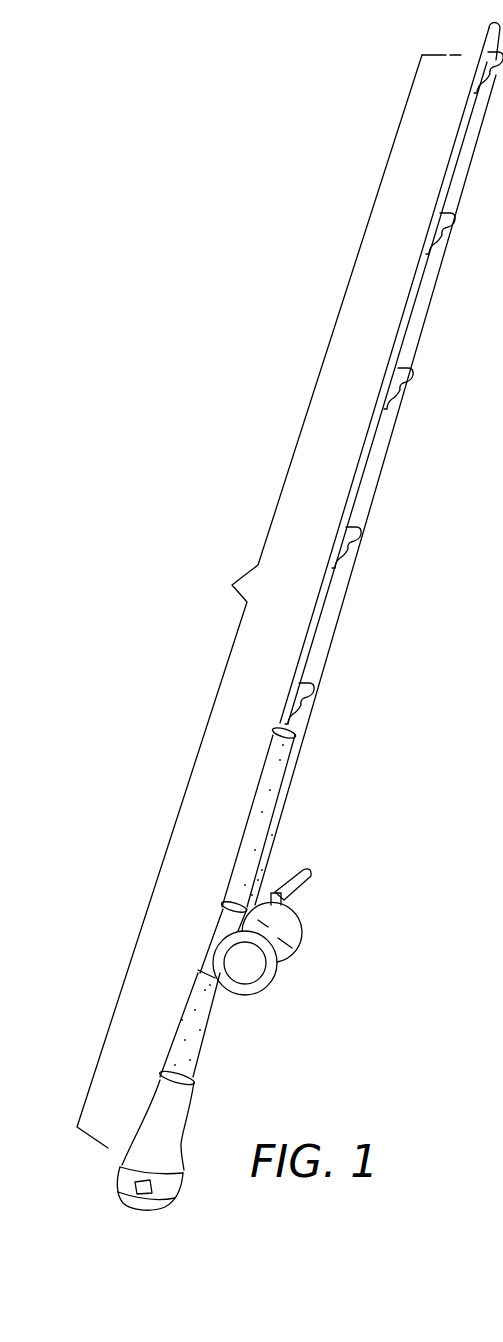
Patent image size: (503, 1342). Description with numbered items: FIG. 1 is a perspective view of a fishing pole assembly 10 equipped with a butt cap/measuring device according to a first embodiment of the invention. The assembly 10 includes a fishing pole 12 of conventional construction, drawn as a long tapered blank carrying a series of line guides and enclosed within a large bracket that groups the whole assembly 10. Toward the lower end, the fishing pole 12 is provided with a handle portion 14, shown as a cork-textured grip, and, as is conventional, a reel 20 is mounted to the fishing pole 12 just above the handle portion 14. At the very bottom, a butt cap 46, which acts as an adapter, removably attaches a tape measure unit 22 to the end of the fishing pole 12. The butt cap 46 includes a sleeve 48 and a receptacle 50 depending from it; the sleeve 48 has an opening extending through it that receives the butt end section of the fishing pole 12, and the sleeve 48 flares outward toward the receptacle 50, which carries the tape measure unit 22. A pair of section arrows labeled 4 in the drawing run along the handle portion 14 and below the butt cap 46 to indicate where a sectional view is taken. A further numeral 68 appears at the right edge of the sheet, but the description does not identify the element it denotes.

The fishing pole assembly 10 is at (269, 601).
The fishing pole 12 is at (410, 453).
The handle portion 14 is at (183, 1033).
The reel 20 is at (298, 928).
The tape measure unit 22 is at (153, 1203).
The butt cap 46 is at (174, 1156).
The sleeve 48 is at (167, 1107).
The receptacle 50 is at (123, 1175).
The component 68 is at (493, 972).
The section line 4- 4 is at (178, 1070).